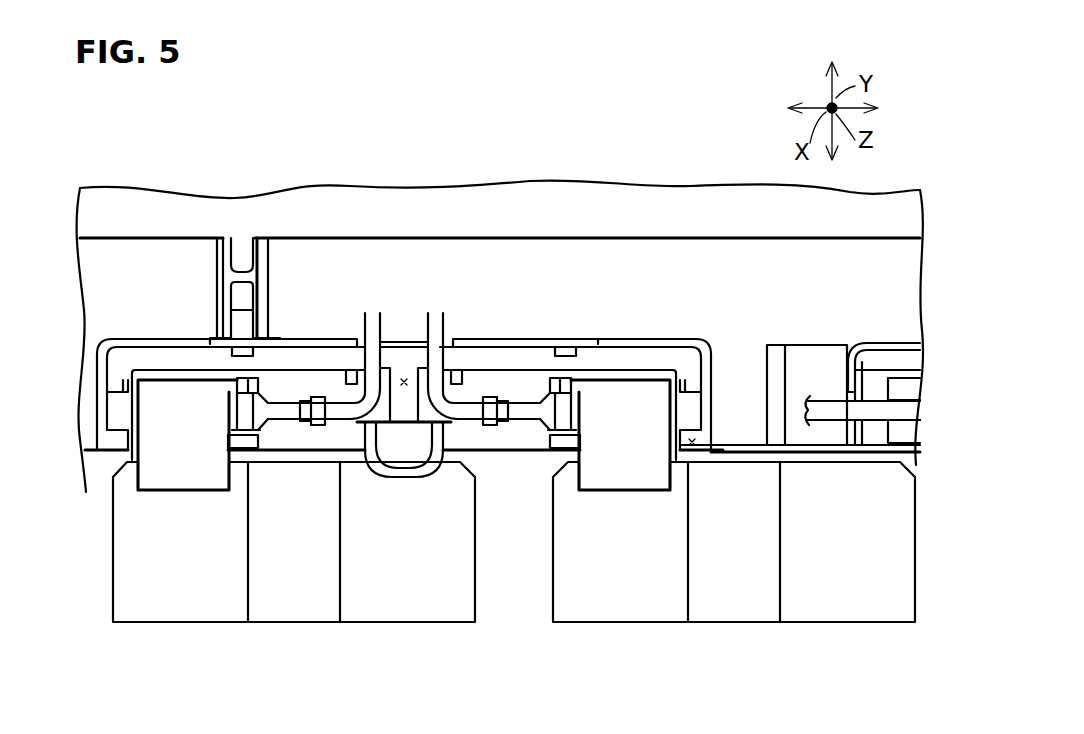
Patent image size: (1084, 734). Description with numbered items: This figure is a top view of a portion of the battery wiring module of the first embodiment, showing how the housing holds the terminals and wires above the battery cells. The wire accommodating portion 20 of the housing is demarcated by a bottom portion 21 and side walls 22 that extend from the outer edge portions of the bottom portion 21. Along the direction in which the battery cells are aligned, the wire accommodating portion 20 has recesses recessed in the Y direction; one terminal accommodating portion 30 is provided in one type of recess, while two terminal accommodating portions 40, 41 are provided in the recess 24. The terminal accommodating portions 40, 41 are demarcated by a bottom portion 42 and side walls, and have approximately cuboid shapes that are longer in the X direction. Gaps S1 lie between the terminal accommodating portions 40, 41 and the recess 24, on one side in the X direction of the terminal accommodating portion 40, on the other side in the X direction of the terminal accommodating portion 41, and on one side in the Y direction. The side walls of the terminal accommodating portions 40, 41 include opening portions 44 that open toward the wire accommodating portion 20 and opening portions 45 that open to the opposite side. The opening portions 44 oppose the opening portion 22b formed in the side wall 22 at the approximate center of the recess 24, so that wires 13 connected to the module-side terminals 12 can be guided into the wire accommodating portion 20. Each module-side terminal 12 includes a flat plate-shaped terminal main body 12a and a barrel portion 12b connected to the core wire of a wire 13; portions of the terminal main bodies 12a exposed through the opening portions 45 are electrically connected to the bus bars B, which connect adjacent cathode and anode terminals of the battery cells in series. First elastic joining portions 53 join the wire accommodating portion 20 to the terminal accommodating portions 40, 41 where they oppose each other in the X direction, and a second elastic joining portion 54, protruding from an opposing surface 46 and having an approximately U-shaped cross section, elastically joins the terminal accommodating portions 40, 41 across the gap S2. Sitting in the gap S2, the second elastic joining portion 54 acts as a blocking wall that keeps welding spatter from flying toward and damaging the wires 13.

The module-side terminal 12 is at (158, 491).
The terminal main body 12a is at (197, 491).
The barrel portion 12b is at (284, 441).
The wire 13 is at (371, 313).
The wire accommodating portion 20 is at (650, 245).
The bottom portion 21 is at (700, 262).
The side wall 22 is at (170, 339).
The opening portion 22b is at (457, 341).
The recess 24 is at (620, 348).
The terminal accommodating portion 30 is at (903, 368).
The terminal accommodating portion 40 is at (286, 370).
The terminal accommodating portion 41 is at (545, 372).
The bottom portion 42 is at (321, 441).
The opening portion 44 is at (363, 363).
The opening portion 45 is at (141, 456).
The opposing surface 46 is at (371, 445).
The first elastic joining portion 53 is at (119, 398).
The second elastic joining portion 54 is at (405, 478).
The gap S1 is at (704, 446).
The gap S2 is at (404, 378).
The bus bar B is at (417, 604).